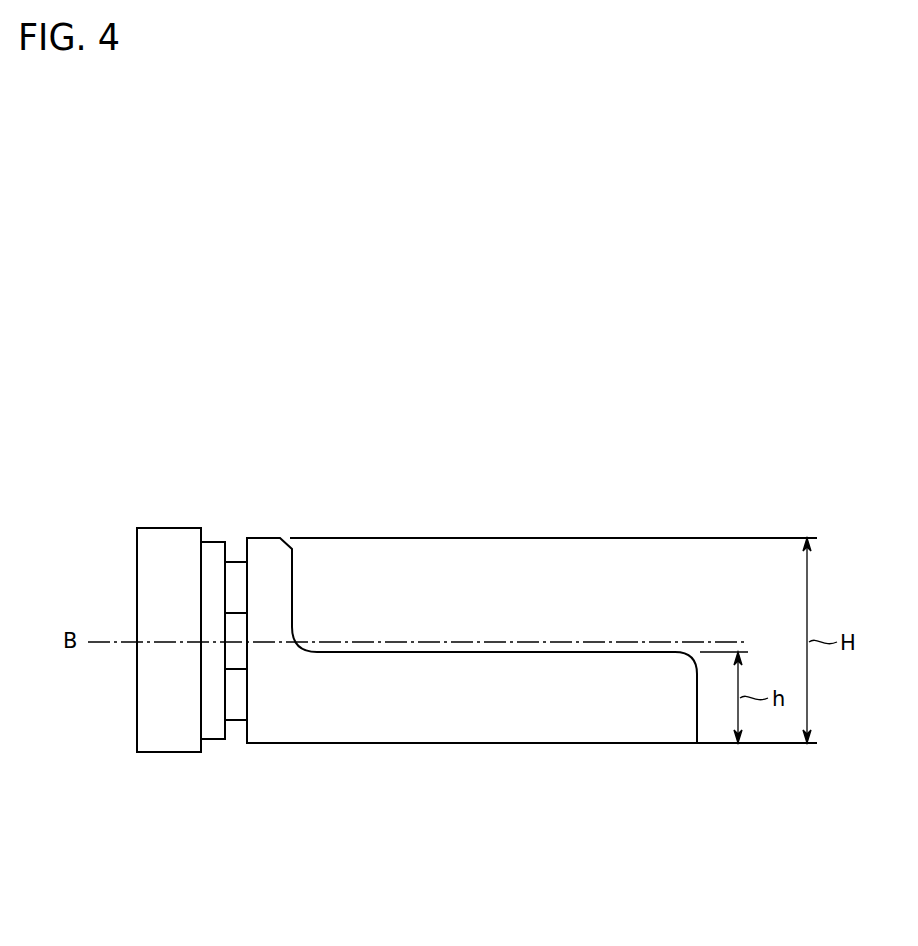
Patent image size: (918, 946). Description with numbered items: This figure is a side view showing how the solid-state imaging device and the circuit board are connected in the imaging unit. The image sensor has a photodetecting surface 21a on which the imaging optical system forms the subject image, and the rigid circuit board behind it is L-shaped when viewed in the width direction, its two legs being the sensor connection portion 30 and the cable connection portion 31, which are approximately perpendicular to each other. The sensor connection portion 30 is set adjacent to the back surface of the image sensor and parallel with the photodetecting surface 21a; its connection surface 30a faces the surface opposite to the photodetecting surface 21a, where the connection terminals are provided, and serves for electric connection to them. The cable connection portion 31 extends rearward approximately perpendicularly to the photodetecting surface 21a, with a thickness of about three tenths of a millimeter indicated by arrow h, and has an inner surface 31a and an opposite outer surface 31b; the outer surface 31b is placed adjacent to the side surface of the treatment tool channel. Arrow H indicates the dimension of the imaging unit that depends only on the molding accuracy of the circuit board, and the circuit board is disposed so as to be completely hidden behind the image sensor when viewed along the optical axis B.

The photodetecting surface 21a is at (137, 587).
The sensor connection portion 30 is at (263, 537).
The connection surface 30a is at (245, 732).
The cable connection portion 31 is at (463, 651).
The inner surface 31a is at (575, 651).
The outer surface 31b is at (577, 745).